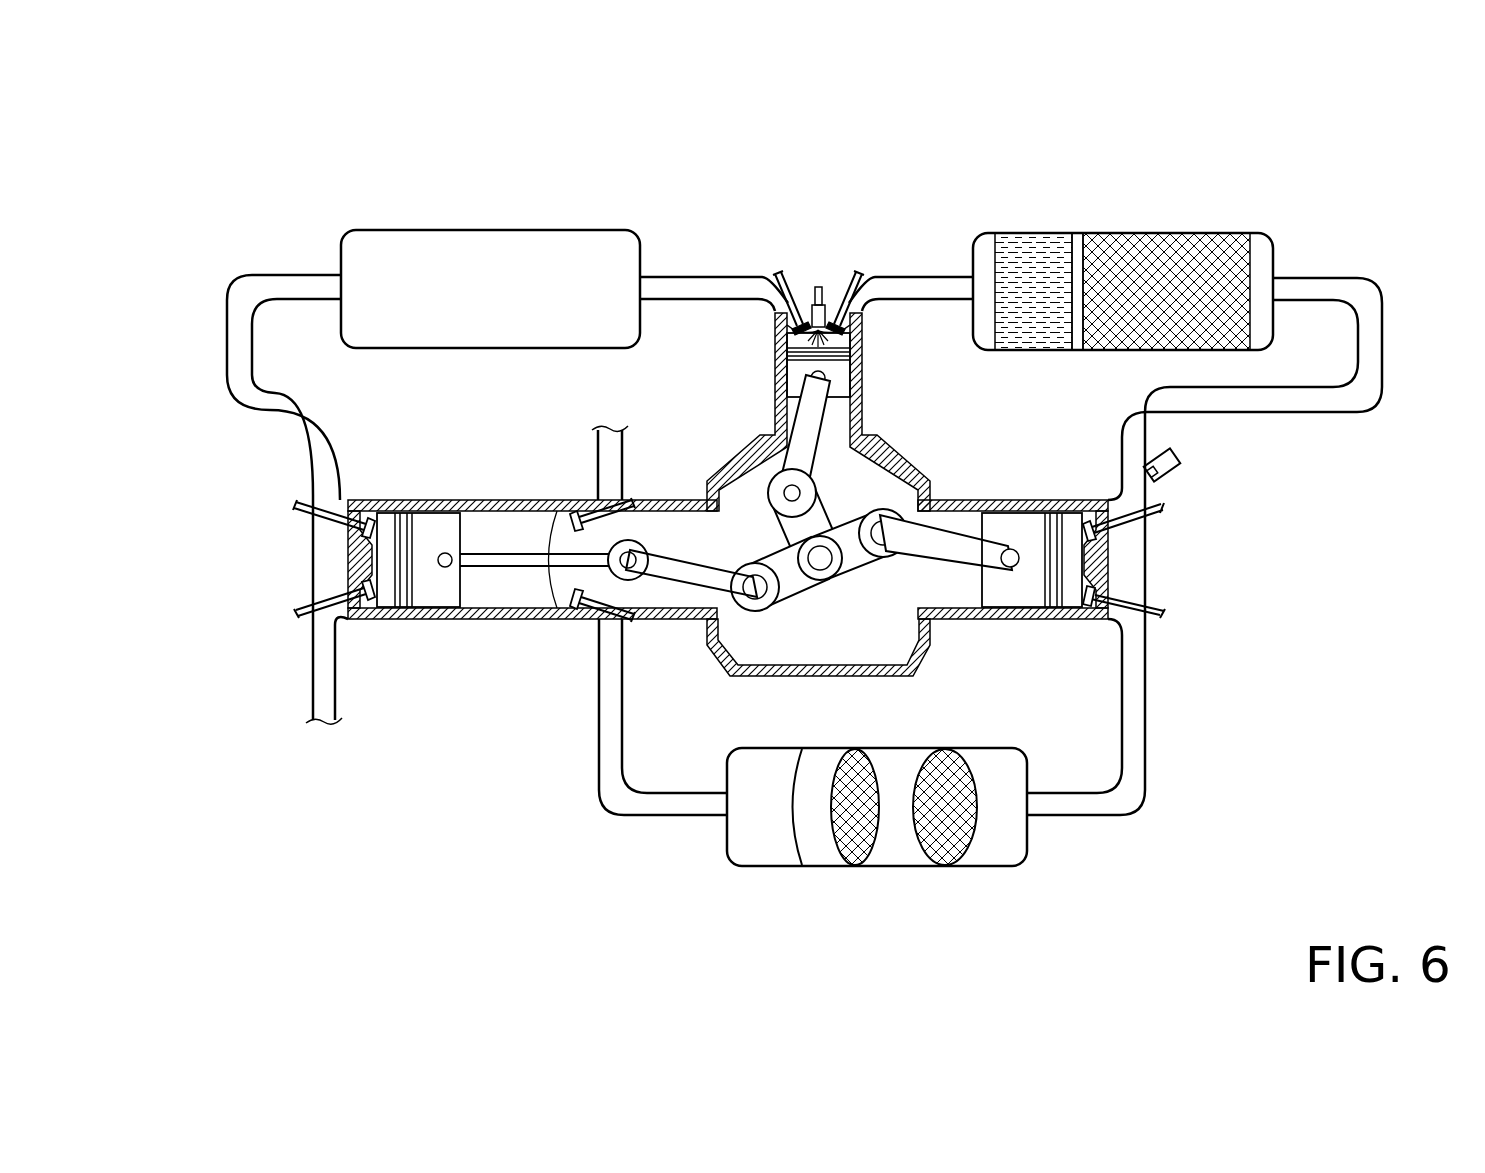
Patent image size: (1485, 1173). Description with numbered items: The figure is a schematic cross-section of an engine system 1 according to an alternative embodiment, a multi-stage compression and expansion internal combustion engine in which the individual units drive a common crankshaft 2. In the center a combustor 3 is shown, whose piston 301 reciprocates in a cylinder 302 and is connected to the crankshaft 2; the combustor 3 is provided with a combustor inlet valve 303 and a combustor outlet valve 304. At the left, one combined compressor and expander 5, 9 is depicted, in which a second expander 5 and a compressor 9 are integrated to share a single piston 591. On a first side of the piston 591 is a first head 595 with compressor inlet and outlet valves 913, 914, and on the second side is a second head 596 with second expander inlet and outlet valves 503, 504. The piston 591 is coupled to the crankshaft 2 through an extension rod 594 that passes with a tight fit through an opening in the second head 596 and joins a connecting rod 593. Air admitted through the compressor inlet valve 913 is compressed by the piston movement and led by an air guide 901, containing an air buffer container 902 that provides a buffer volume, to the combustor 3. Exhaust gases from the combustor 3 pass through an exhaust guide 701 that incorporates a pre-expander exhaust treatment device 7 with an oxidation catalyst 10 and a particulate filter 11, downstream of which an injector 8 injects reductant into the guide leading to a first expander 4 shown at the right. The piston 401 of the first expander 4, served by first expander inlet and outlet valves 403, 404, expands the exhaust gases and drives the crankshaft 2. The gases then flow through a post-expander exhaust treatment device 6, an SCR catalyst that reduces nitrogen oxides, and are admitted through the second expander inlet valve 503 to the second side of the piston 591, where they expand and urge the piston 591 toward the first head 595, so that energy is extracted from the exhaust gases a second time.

The engine system 1 is at (185, 148).
The crankshaft 2 is at (818, 562).
The combustor 3 is at (862, 372).
The piston 301 is at (800, 367).
The cylinder 302 is at (802, 420).
The combustor inlet valve 303 is at (767, 277).
The combustor outlet valve 304 is at (868, 277).
The first piston expander 4 is at (1028, 620).
The piston 401 is at (1022, 535).
The first expander inlet valve 403 is at (1165, 510).
The first expander outlet valve 404 is at (1165, 608).
The second piston expander 5 is at (466, 567).
The piston compressor 9 is at (432, 620).
The second expander inlet valve 503 is at (588, 615).
The second expander outlet valve 504 is at (592, 497).
The piston 591 is at (430, 525).
The connecting rod 593 is at (682, 568).
The extension rod 594 is at (520, 548).
The first head 595 is at (355, 555).
The second head 596 is at (556, 592).
The post-expander exhaust treatment device 6 is at (780, 866).
The pre-expander exhaust treatment device 7 is at (1233, 236).
The oxidation catalyst 10 is at (1030, 262).
The particulate filter 11 is at (1153, 255).
The exhaust guide 701 is at (1320, 278).
The injector 8 is at (1172, 480).
The air guide 901 is at (277, 275).
The air buffer container 902 is at (487, 230).
The compressor inlet valve 913 is at (300, 600).
The compressor outlet valve 914 is at (300, 517).